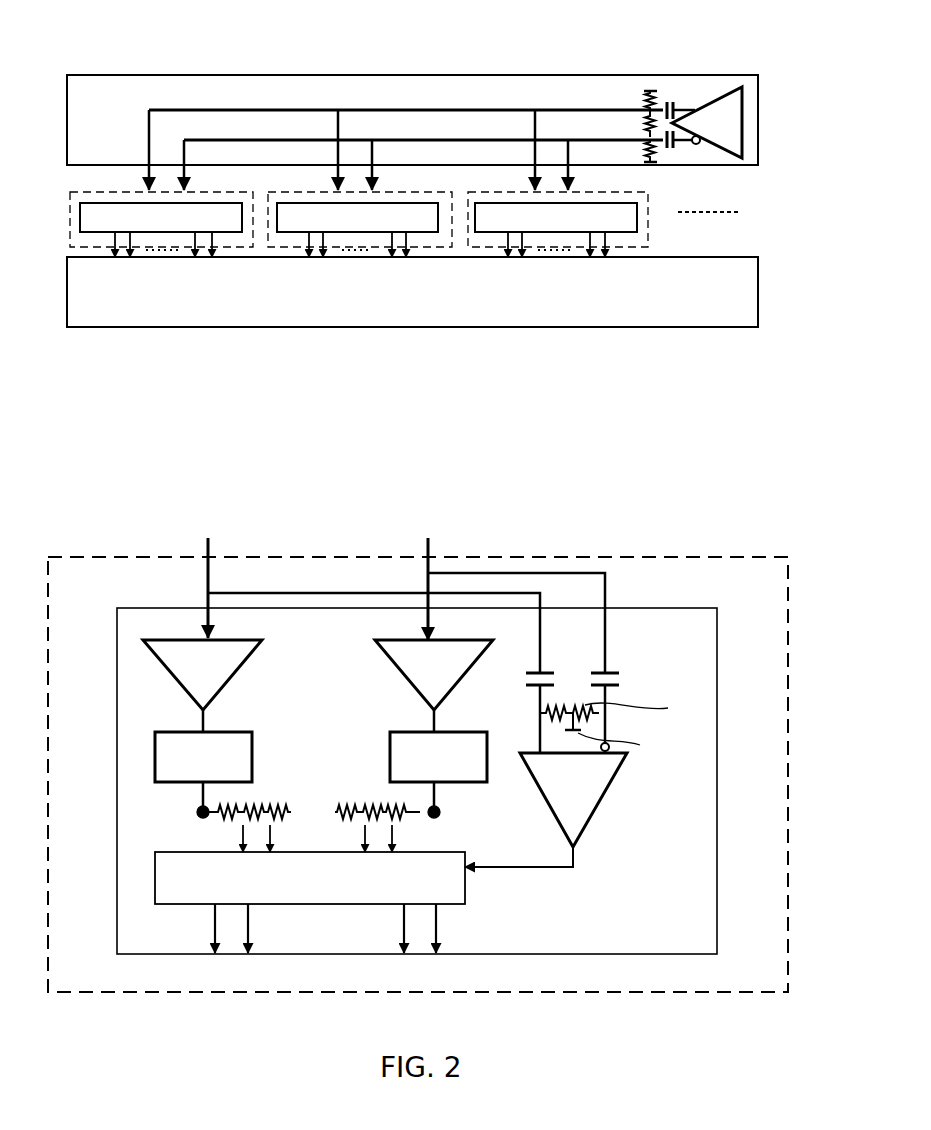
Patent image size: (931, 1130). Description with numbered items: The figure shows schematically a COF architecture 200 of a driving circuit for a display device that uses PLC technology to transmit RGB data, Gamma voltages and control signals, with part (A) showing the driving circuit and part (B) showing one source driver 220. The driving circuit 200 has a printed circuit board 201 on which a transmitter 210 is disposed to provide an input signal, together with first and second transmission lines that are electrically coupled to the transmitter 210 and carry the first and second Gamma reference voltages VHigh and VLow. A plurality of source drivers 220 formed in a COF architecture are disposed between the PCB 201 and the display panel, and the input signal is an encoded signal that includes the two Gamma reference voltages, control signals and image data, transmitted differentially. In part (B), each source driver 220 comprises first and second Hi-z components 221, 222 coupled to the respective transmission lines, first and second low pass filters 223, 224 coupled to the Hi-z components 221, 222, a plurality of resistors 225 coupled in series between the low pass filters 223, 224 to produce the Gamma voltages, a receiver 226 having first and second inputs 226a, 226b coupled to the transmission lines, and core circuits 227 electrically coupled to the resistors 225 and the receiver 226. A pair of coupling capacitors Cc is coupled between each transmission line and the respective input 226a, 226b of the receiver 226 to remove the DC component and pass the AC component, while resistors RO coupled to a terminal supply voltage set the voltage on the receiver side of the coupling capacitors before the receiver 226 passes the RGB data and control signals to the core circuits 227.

The COF architecture of driving circuit 200 is at (438, 31).
The printed circuit board 201 is at (112, 151).
The transmitter 210 is at (725, 92).
The source driver 220 is at (193, 213).
The first Hi-z component 221 is at (190, 680).
The second Hi-z component 222 is at (430, 678).
The first low pass filter 223 is at (178, 752).
The second low pass filter 224 is at (415, 750).
The resistors 225 is at (175, 815).
The receiver 226 is at (585, 800).
The first input of receiver 226a is at (545, 600).
The second input of receiver 226b is at (608, 600).
The core circuits 227 is at (183, 882).